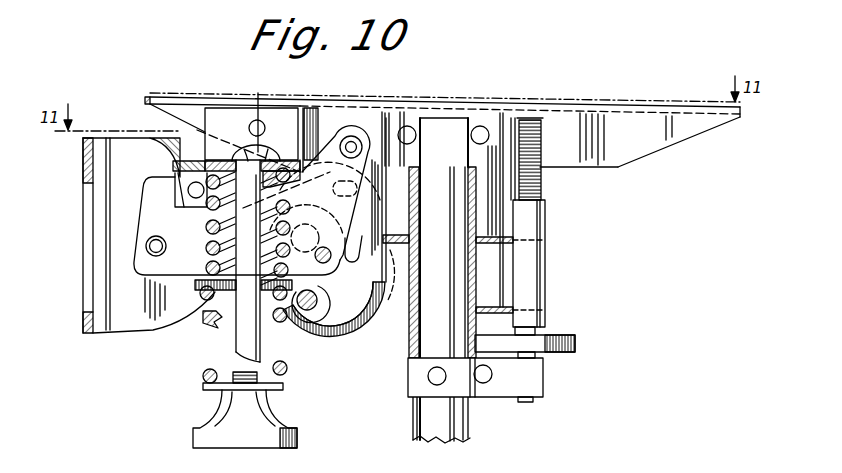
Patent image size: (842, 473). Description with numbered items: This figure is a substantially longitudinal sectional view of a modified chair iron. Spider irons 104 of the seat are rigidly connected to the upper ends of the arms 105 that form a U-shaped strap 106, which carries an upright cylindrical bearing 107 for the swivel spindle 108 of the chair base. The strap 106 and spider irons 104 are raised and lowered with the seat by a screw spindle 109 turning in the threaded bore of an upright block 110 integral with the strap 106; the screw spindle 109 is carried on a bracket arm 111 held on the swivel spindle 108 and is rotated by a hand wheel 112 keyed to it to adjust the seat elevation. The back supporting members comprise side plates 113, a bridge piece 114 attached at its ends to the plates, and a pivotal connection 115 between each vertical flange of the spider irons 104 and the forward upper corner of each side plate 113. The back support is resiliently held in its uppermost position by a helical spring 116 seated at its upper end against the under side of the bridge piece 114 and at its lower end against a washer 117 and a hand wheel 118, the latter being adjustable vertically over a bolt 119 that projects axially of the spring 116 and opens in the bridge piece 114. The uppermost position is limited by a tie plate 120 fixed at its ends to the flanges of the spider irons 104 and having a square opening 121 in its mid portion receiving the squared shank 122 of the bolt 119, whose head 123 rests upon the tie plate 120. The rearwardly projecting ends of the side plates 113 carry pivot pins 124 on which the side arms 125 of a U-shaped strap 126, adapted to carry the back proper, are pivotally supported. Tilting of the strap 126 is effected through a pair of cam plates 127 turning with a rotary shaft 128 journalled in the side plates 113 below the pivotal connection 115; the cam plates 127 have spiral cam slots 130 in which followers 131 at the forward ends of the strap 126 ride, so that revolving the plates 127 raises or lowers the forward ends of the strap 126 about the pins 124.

The spider irons 104 is at (630, 150).
The arms 105 is at (493, 173).
The U-shaped strap 106 is at (383, 113).
The upright cylindrical bearing 107 is at (407, 327).
The swivel spindle 108 is at (414, 418).
The screw spindle 109 is at (538, 141).
The upright block 110 is at (546, 276).
The bracket arm 111 is at (482, 393).
The hand wheel 112 is at (562, 340).
The side plates 113 is at (145, 205).
The bridge piece 114 is at (183, 202).
The pivotal connection 115 is at (347, 148).
The helical spring 116 is at (290, 199).
The washer 117 is at (230, 383).
The hand wheel 118 is at (272, 413).
The bolt 119 is at (257, 338).
The tie plate 120 is at (261, 140).
The square opening 121 is at (266, 158).
The squared shank 122 is at (246, 152).
The head 123 is at (262, 114).
The pivot pins 124 is at (166, 250).
The side arms 125 is at (147, 325).
The U-shaped strap 126 is at (76, 170).
The cam plates 127 is at (338, 338).
The rotary shaft 128 is at (316, 256).
The spiral cam slots 130 is at (350, 312).
The followers 131 is at (307, 336).